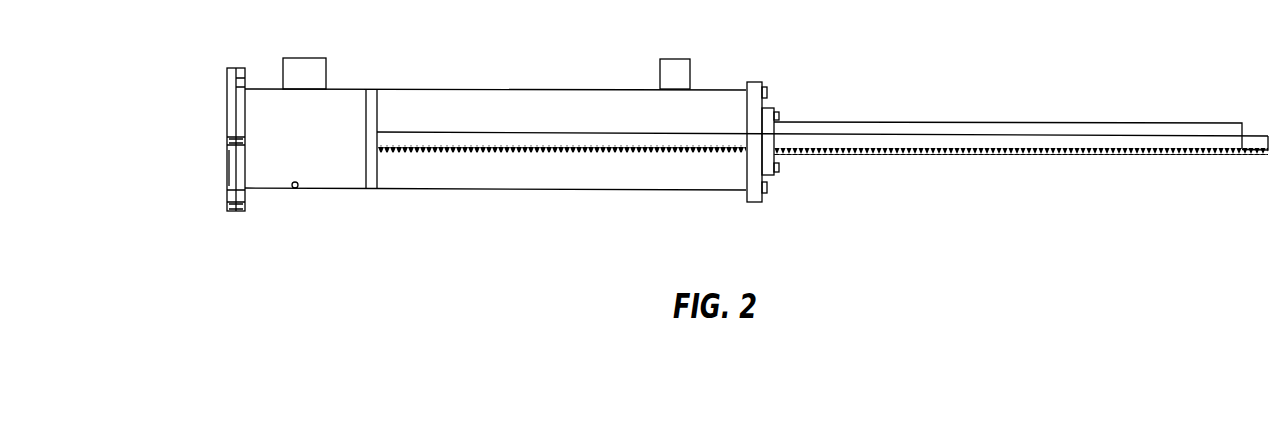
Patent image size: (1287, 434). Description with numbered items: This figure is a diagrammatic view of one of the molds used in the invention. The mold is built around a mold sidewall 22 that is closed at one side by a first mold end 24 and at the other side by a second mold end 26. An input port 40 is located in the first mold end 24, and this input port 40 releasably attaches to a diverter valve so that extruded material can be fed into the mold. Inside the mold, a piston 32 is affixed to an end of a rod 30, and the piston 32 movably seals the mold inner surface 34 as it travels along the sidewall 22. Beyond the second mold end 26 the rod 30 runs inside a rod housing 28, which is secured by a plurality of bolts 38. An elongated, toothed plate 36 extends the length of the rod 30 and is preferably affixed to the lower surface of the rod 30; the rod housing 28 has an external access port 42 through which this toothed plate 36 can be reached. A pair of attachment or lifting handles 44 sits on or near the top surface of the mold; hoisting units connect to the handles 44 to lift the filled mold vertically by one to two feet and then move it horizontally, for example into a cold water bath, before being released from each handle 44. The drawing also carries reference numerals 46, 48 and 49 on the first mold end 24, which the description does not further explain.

The mold sidewall 22 is at (550, 89).
The first mold end 24 is at (230, 113).
The second mold end 26 is at (761, 81).
The rod housing 28 is at (985, 122).
The rod 30 is at (1155, 140).
The piston 32 is at (377, 188).
The mold inner surface 34 is at (297, 187).
The elongated toothed plate 36 is at (502, 178).
The bolts 38 is at (768, 192).
The input port 40 is at (232, 135).
The external access port 42 is at (882, 155).
The attachment handles 44 is at (318, 58).
The plate section 46 is at (230, 173).
The upper plate section 48 is at (247, 72).
The lower plate section 49 is at (227, 208).